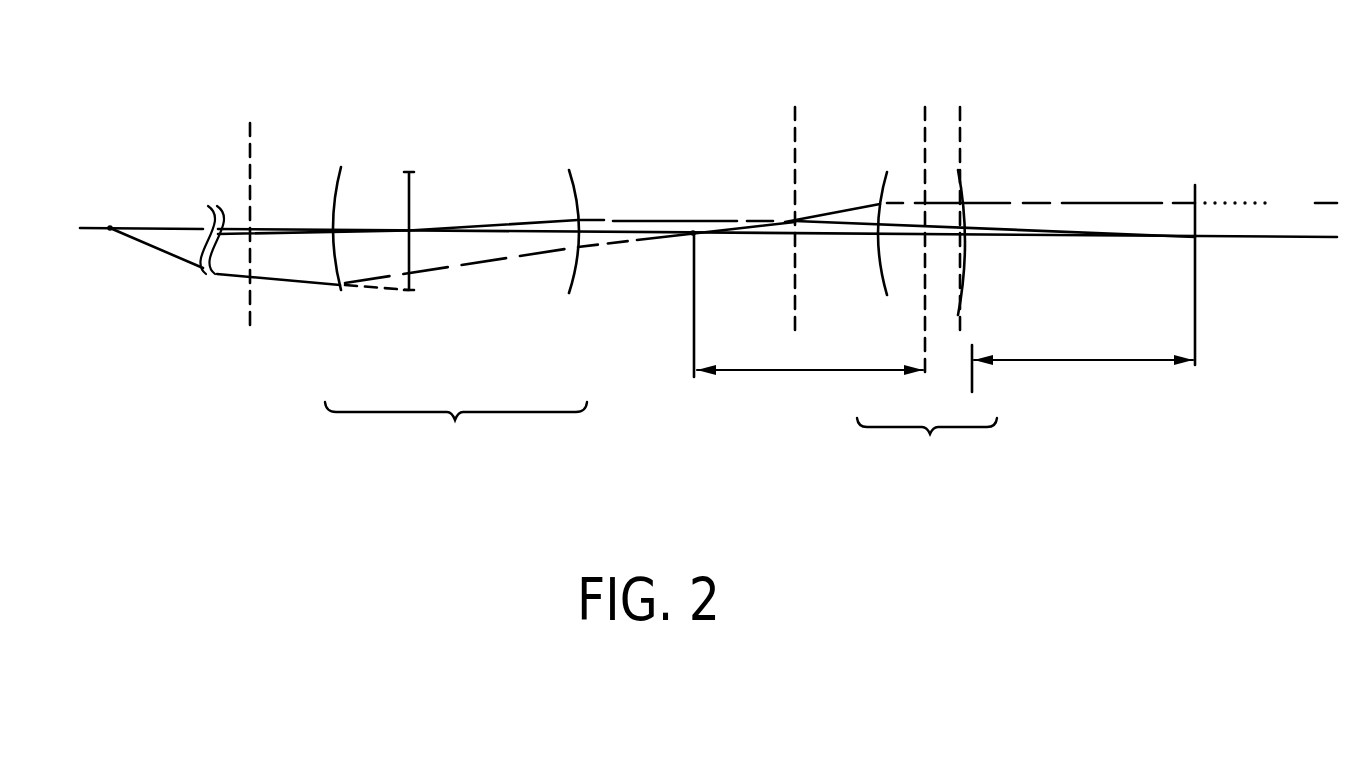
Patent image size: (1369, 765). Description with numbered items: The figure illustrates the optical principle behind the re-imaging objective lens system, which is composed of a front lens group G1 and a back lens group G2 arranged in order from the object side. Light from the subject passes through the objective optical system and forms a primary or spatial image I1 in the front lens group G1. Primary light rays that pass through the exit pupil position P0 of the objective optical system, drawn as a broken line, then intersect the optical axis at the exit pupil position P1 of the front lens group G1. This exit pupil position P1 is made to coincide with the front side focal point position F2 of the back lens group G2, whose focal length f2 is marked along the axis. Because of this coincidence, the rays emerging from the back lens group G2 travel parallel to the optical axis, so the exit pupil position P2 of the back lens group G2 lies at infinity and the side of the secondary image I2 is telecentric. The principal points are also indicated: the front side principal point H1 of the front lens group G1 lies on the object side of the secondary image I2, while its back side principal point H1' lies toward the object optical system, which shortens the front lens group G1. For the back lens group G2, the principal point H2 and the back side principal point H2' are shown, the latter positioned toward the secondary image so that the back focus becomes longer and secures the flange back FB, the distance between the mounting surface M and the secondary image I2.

The exit pupil position of the objective optical system P0 is at (110, 231).
The back side principal point of the front lens group H1' is at (250, 173).
The front lens group G1 is at (456, 325).
The primary image I1 is at (409, 171).
The exit pupil position of the front lens group P1 is at (690, 224).
The front side focal point position of the back lens group F2 is at (690, 240).
The front side principal point of the front lens group H1 is at (795, 179).
The principal point of the back lens group H2 is at (917, 202).
The back side principal point of the back lens group H2' is at (977, 178).
The back lens group G2 is at (927, 328).
The focal length of the back lens group f2 is at (810, 349).
The mounting surface M is at (974, 365).
The flange back FB is at (1083, 343).
The secondary image I2 is at (1195, 187).
The exit pupil position of the back lens group P2 is at (1286, 205).